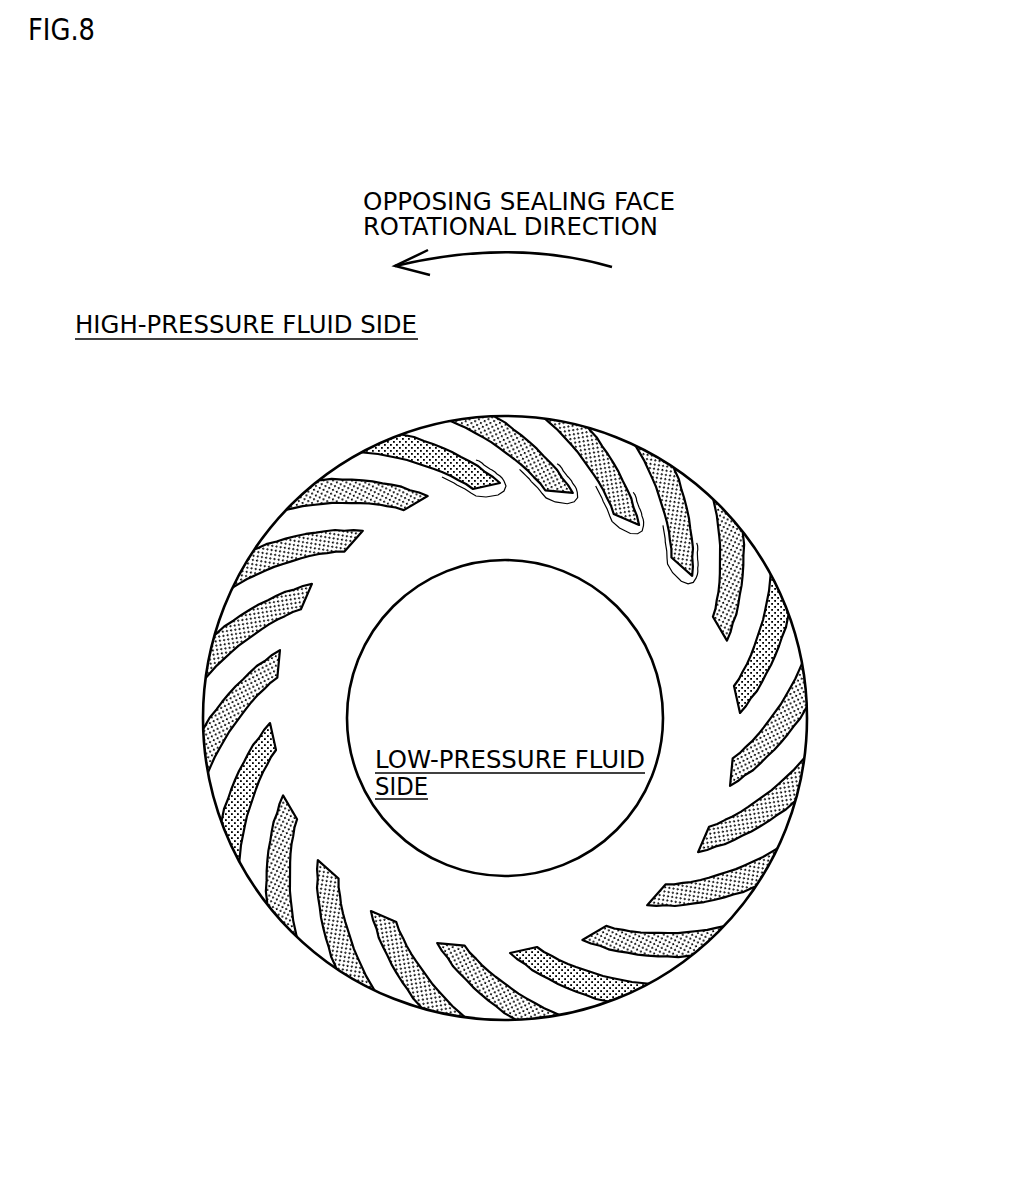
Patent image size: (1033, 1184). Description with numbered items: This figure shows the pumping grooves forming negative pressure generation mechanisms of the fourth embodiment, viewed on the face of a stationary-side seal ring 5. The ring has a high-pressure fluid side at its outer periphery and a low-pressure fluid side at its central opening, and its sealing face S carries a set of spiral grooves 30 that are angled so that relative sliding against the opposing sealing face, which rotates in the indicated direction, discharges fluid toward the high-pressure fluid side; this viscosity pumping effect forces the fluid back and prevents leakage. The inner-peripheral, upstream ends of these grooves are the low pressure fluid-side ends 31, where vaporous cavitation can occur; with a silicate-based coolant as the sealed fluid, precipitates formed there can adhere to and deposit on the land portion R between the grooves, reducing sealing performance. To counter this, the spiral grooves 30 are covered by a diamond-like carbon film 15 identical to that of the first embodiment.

The stationary-side seal ring 5 is at (685, 475).
The diamond-like carbon film 15 is at (372, 446).
The spiral grooves 30 is at (430, 447).
The low pressure fluid-side ends 31 is at (557, 490).
The sealing face S is at (618, 450).
The land portion R is at (672, 613).